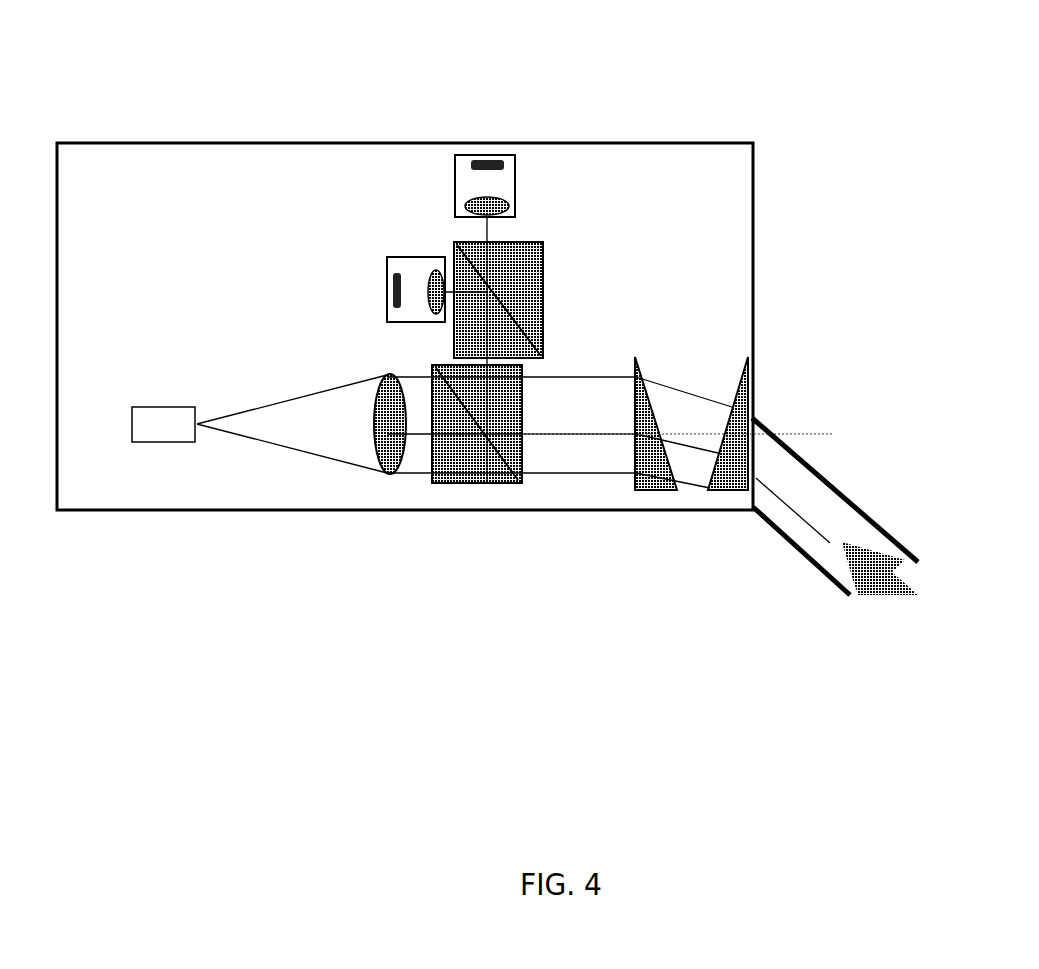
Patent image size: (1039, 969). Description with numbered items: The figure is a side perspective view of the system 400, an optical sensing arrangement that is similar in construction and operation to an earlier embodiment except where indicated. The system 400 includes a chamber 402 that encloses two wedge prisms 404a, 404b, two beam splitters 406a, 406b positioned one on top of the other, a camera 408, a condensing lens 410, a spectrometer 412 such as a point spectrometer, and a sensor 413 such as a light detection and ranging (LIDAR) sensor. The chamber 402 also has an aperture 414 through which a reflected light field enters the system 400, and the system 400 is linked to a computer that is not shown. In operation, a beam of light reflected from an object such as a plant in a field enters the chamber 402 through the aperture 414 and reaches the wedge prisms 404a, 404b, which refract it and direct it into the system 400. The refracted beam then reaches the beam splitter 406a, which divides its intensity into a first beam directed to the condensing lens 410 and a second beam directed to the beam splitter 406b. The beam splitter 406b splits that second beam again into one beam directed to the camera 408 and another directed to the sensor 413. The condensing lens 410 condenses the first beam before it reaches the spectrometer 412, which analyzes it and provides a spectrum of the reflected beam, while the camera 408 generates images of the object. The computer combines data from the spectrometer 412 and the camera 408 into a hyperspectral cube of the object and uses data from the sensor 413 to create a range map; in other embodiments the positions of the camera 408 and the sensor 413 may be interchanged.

The system 400 is at (907, 212).
The chamber 402 is at (762, 236).
The prism 404a is at (652, 465).
The prism 404b is at (733, 465).
The beam splitter 406a is at (490, 448).
The beam splitter 406b is at (532, 265).
The camera 408 is at (403, 268).
The condensing lens 410 is at (393, 455).
The spectrometer 412 is at (170, 420).
The sensor 413 is at (465, 160).
The aperture 414 is at (753, 457).